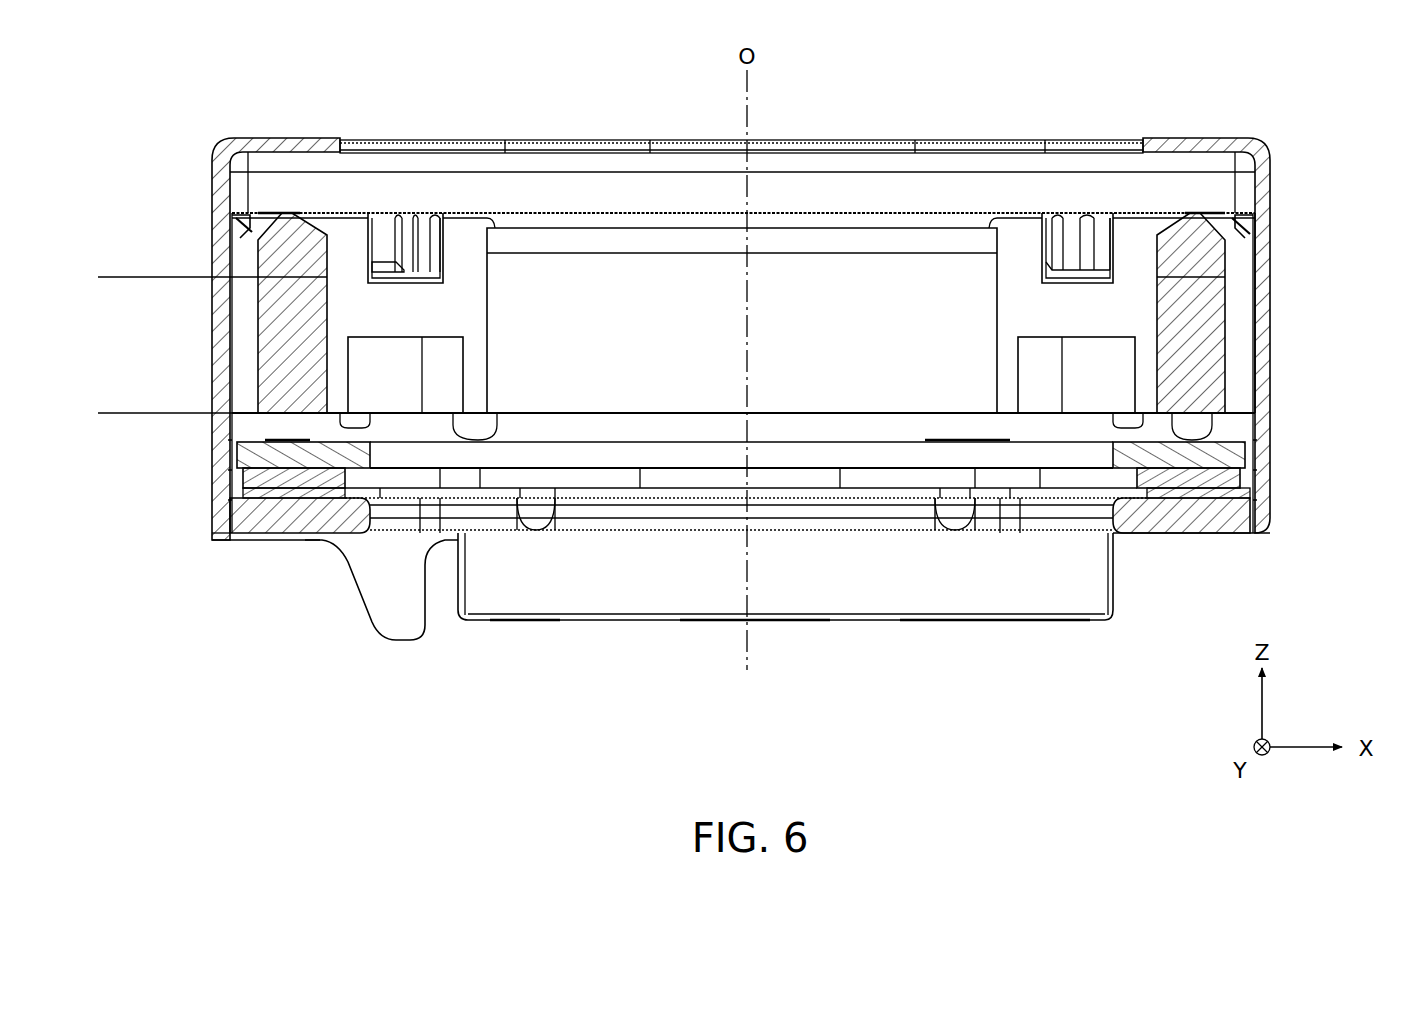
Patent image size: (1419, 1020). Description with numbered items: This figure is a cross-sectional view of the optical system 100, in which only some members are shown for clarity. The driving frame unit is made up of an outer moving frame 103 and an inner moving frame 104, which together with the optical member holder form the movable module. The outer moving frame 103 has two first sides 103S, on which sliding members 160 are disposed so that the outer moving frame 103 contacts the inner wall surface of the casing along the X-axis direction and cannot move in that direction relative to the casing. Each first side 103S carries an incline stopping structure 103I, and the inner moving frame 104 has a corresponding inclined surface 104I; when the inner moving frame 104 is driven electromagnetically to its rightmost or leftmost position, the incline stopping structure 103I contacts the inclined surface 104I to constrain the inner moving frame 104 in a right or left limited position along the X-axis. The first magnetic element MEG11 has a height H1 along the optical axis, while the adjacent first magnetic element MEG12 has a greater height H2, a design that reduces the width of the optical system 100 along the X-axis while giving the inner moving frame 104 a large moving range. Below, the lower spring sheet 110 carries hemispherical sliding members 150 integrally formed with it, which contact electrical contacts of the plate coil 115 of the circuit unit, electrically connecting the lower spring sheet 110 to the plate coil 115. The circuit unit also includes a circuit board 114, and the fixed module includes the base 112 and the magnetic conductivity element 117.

The optical system 100 is at (1268, 88).
The outer moving frame 103 is at (1222, 220).
The incline stopping structure 103I is at (240, 252).
The first side 103S is at (1262, 282).
The inner moving frame 104 is at (1012, 232).
The inclined surface 104I is at (278, 213).
The first magnetic element MEG11 is at (278, 415).
The first magnetic element MEG12 is at (880, 285).
The lower spring sheet 110 is at (822, 415).
The base 112 is at (1237, 513).
The circuit board 114 is at (1243, 475).
The plate coil 115 is at (1240, 455).
The magnetic conductivity element 117 is at (1237, 495).
The sliding member 150 is at (478, 432).
The sliding member 160 is at (232, 297).
The height H1 is at (106, 280).
The height H2 is at (566, 256).